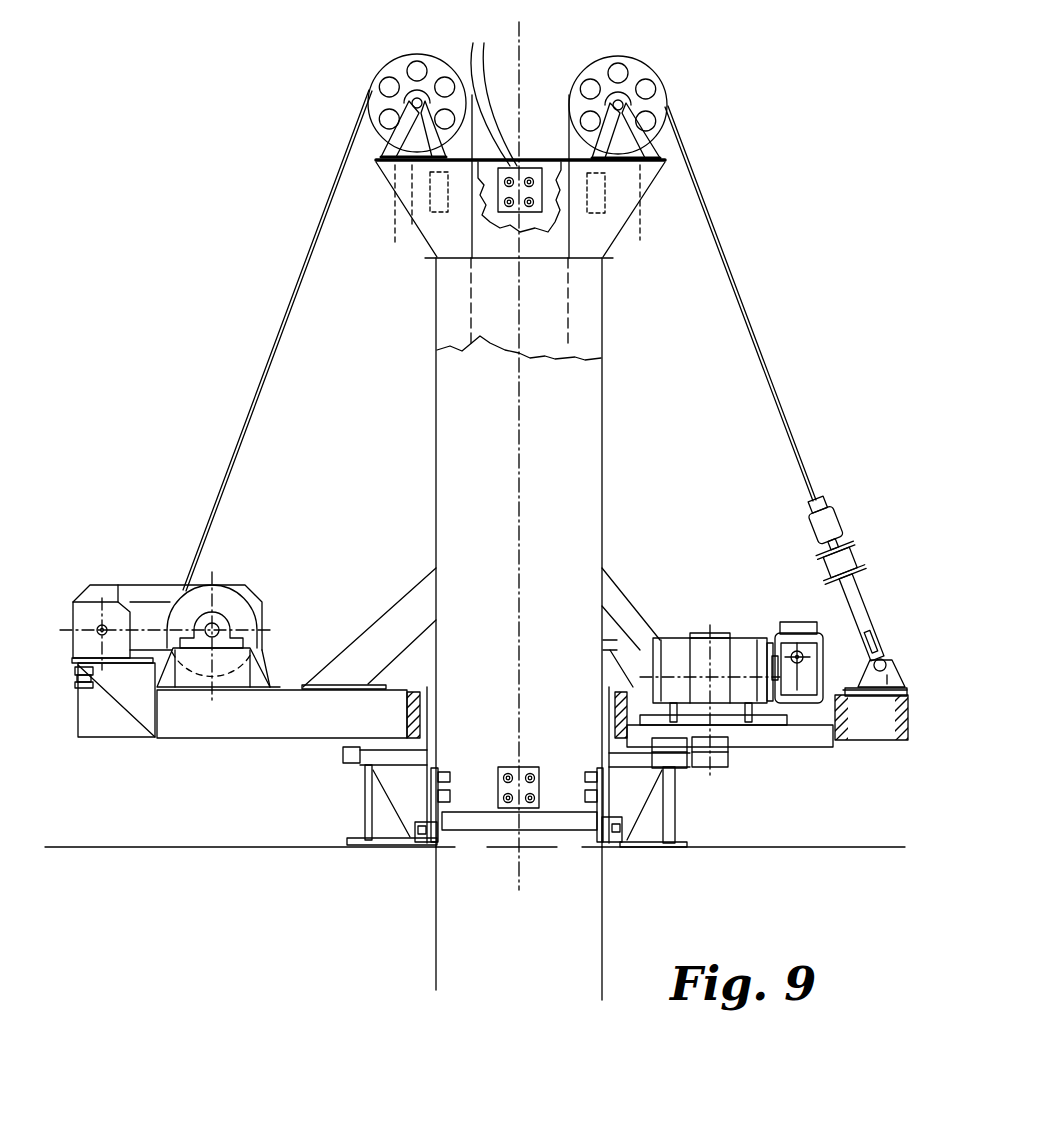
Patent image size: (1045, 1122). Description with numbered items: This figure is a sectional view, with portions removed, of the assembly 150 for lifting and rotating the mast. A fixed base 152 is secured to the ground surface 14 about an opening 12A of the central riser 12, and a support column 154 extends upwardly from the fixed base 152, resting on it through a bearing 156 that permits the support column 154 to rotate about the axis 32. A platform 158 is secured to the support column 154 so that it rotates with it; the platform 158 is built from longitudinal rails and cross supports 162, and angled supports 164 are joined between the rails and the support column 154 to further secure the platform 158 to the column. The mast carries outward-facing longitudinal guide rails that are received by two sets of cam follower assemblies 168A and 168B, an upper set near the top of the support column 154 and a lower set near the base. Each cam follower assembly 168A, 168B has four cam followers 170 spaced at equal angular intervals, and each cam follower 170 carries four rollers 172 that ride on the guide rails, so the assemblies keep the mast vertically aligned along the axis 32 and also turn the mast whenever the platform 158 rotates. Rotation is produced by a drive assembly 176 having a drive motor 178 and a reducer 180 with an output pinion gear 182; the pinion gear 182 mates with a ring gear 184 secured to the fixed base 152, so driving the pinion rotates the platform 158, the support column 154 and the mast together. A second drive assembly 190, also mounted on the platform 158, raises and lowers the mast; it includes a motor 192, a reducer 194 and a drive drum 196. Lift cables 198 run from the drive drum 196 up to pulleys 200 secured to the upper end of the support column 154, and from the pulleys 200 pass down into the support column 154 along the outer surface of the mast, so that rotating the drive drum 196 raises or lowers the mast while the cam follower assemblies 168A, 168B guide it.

The central riser 12 is at (436, 903).
The opening 12A is at (437, 849).
The ground surface 14 is at (197, 845).
The axis 32 is at (522, 36).
The assembly for lifting and rotating the mast 150 is at (740, 222).
The fixed base 152 is at (728, 790).
The support column 154 is at (604, 472).
The bearing 156 is at (612, 846).
The platform 158 is at (291, 605).
The cross supports 162 is at (405, 712).
The angled supports 164 is at (393, 607).
The cam follower assembly 168A is at (420, 252).
The cam follower assembly 168B is at (455, 748).
The cam follower 170 is at (523, 163).
The rollers 172 is at (637, 255).
The drive assembly 176 is at (748, 575).
The drive motor 178 is at (810, 620).
The reducer 180 is at (743, 637).
The output pinion gear 182 is at (730, 756).
The ring gear 184 is at (360, 750).
The second drive assembly 190 is at (143, 530).
The motor 192 is at (88, 616).
The reducer 194 is at (140, 595).
The drive drum 196 is at (222, 583).
The lift cables 198 is at (267, 363).
The pulleys 200 is at (402, 68).